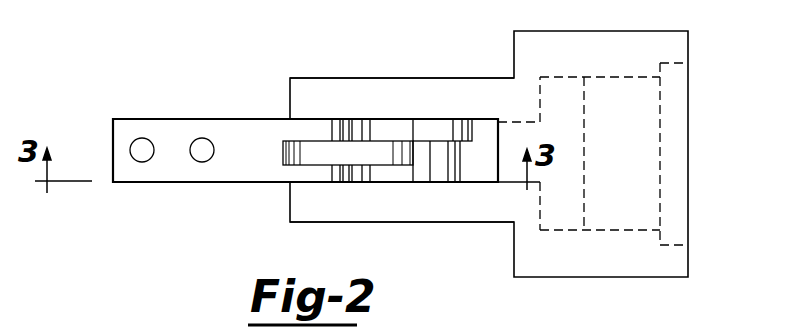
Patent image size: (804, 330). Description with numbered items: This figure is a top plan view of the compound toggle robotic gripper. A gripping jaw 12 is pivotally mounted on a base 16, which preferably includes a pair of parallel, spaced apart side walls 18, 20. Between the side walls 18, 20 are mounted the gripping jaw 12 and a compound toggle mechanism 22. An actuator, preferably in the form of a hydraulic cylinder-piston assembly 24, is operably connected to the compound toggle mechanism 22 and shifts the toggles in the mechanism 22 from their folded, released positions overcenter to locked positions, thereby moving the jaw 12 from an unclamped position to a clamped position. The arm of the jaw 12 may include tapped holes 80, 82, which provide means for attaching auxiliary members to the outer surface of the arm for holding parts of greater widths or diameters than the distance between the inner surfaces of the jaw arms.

The gripping jaw 12 is at (231, 128).
The base 16 is at (485, 90).
The side wall 18 is at (355, 90).
The side wall 20 is at (362, 200).
The compound toggle mechanism 22 is at (402, 160).
The hydraulic cylinder-piston assembly 24 is at (618, 78).
The tapped hole 80 is at (144, 158).
The tapped hole 82 is at (200, 159).